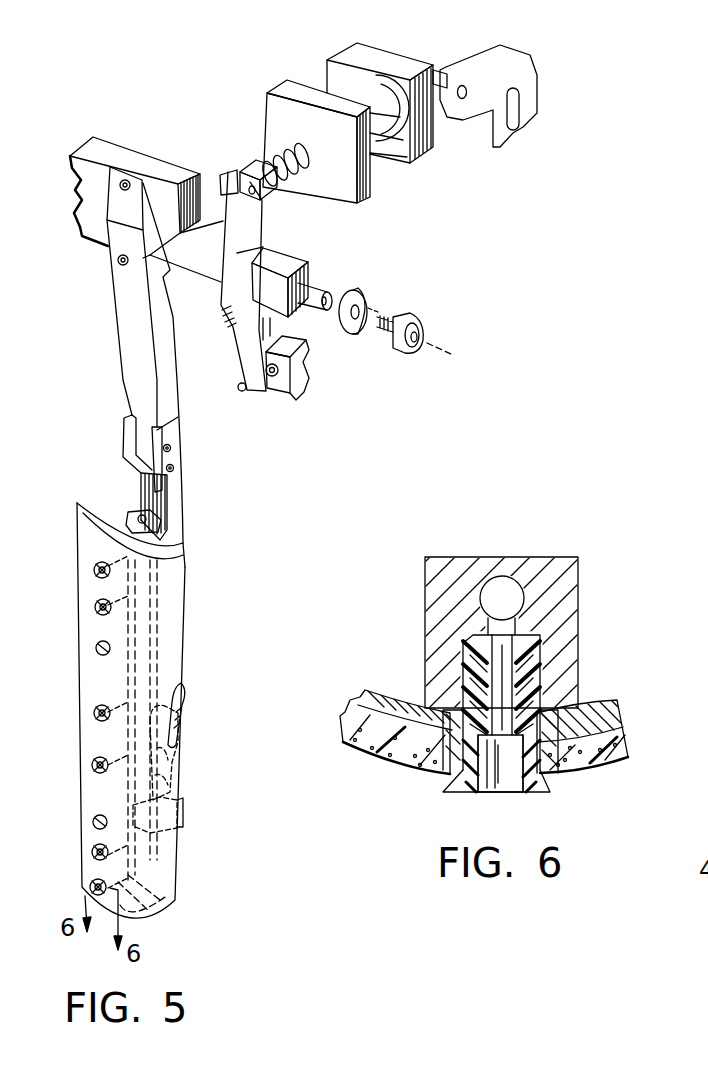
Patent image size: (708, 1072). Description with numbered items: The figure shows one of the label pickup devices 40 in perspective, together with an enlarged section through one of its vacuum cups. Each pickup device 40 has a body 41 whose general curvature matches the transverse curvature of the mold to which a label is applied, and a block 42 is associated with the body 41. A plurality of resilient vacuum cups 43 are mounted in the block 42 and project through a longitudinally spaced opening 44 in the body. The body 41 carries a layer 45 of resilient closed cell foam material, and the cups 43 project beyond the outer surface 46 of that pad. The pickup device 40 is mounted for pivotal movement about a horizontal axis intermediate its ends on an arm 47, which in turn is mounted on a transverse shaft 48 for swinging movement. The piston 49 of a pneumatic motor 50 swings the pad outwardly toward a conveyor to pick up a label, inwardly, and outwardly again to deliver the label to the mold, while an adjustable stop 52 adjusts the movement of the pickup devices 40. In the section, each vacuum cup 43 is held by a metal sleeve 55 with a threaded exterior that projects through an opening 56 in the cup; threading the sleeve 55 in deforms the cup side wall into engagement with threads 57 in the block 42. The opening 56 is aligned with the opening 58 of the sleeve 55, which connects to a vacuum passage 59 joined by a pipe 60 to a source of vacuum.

In FIG. 5, the pickup device 40 is at (193, 628).
In FIG. 6, the body 41 is at (508, 742).
In FIG. 6, the block 42 is at (550, 565).
In FIG. 5, the vacuum cup 43 is at (92, 768).
In FIG. 6, the vacuum cup 43 is at (468, 778).
In FIG. 6, the opening 44 is at (549, 752).
In FIG. 6, the layer of resilient material 45 is at (610, 752).
In FIG. 6, the outer surface 46 is at (395, 757).
In FIG. 5, the arm 47 is at (130, 310).
In FIG. 5, the transverse shaft 48 is at (127, 153).
In FIG. 5, the piston 49 is at (240, 167).
In FIG. 5, the pneumatic motor 50 is at (357, 90).
In FIG. 5, the adjustable stop 52 is at (283, 387).
In FIG. 6, the metal sleeve 55 is at (467, 660).
In FIG. 6, the opening 56 is at (510, 780).
In FIG. 5, the threads 57 is at (247, 320).
In FIG. 6, the threads 57 is at (522, 640).
In FIG. 6, the opening 58 is at (470, 625).
In FIG. 6, the vacuum passage 59 is at (507, 590).
In FIG. 5, the pipe 60 is at (193, 715).